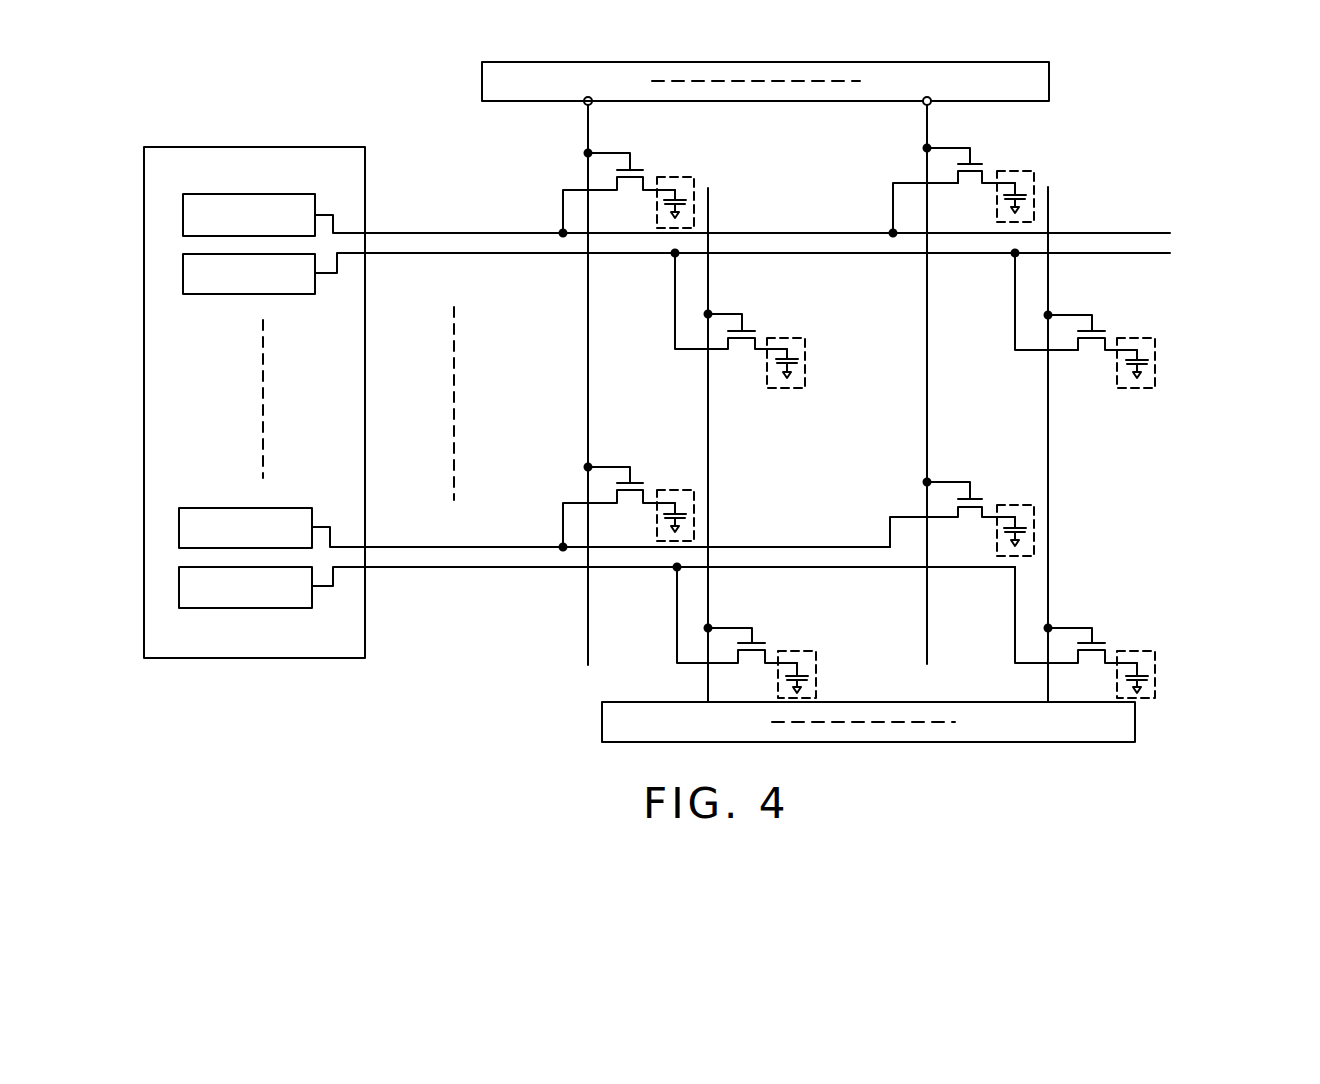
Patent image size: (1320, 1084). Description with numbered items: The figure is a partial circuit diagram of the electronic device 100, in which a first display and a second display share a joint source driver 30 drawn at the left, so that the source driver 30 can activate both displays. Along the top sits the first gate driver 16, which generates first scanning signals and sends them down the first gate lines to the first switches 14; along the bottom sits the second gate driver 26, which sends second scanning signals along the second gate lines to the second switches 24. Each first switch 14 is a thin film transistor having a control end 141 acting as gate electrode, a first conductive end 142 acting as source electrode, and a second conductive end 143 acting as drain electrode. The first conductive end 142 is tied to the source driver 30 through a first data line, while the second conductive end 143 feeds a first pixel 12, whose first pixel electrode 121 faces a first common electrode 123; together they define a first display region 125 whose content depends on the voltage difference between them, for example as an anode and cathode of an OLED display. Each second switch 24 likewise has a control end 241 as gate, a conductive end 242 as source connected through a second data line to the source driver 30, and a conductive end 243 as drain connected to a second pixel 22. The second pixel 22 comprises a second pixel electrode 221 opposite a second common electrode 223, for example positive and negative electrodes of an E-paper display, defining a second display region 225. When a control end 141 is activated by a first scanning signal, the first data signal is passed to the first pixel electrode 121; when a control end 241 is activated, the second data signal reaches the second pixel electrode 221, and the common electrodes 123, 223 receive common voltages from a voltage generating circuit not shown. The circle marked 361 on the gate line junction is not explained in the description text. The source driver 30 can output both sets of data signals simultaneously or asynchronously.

The electronic device 100 is at (443, 64).
The first gate driver 16 is at (740, 62).
The second gate driver 26 is at (1135, 725).
The source driver 30 is at (265, 147).
The gate line connection node 361 is at (922, 104).
The first pixel 12 is at (785, 162).
The first switch 14 is at (813, 329).
The first pixel electrode 121 is at (685, 198).
The first common electrode 123 is at (688, 215).
The first display region 125 is at (666, 177).
The control end 141 is at (972, 153).
The first conductive end 142 is at (940, 183).
The second conductive end 143 is at (983, 176).
The second pixel 22 is at (883, 322).
The second switch 24 is at (930, 475).
The second pixel electrode 221 is at (796, 358).
The second common electrode 223 is at (800, 372).
The second display region 225 is at (777, 338).
The control end 241 is at (1093, 322).
The second conductive end 242 is at (1062, 350).
The second conductive end 243 is at (1108, 348).